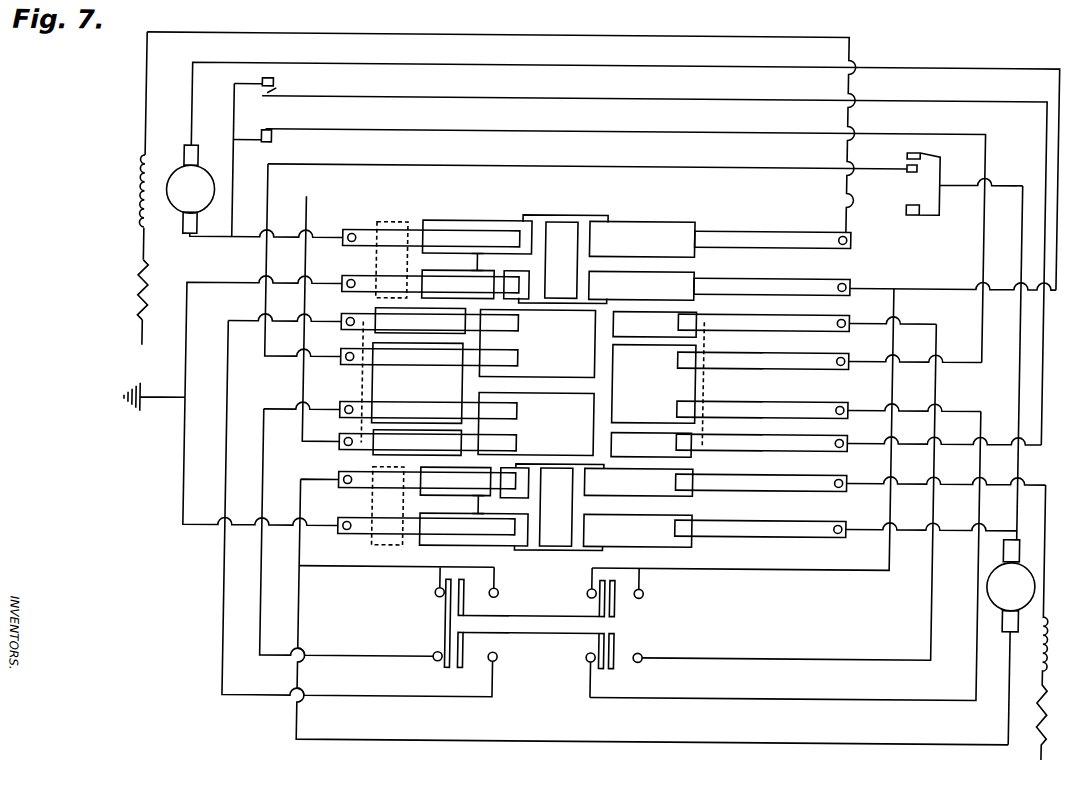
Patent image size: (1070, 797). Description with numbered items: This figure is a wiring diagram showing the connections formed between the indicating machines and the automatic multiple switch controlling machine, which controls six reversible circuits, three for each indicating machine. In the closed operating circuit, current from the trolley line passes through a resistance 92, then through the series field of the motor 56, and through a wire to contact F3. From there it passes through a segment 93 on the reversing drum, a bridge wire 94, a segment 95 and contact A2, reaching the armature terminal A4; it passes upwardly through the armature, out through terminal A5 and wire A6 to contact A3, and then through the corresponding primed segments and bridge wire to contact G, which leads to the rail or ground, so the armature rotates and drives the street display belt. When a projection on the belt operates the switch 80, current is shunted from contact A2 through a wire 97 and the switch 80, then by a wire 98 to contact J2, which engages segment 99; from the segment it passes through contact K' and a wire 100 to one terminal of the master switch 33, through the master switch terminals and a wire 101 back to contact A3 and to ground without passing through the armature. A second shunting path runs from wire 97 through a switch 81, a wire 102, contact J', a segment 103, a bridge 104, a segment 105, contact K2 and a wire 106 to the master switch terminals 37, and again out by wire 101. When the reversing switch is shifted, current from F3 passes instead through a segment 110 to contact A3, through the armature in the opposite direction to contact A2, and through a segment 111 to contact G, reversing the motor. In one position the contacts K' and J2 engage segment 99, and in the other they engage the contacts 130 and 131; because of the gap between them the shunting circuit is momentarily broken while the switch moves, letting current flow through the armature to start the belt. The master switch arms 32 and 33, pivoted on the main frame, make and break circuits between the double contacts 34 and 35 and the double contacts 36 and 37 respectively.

The motor field 56 is at (136, 187).
The resistance 92 is at (130, 299).
The armature terminal A5 is at (180, 148).
The armature terminal A4 is at (187, 241).
The wire A6 is at (300, 63).
The switch 81 is at (282, 90).
The wire 102 is at (540, 97).
The switch 80 is at (268, 144).
The wire 98 is at (362, 130).
The wire 97 is at (264, 182).
The contact F3 is at (846, 250).
The contact A3 is at (846, 280).
The contact A2 is at (345, 247).
The contact G is at (345, 292).
The segment 111 is at (396, 260).
The segment 95 is at (474, 221).
The bridge wire 94 is at (570, 215).
The segment 110 is at (563, 260).
The segment 93 is at (650, 276).
The contact 131 is at (478, 382).
The contact 130 is at (536, 424).
The segment 105 is at (654, 325).
The segment 99 is at (654, 384).
The segment 103 is at (651, 445).
The bridge 104 is at (703, 397).
The contact K2 is at (846, 326).
The contact J2 is at (830, 364).
The contact K' is at (771, 419).
The contact J' is at (767, 454).
The wire 101 is at (772, 574).
The wire 106 is at (924, 614).
The wire 100 is at (772, 697).
The master switch arm 32 is at (438, 592).
The double contact 34 is at (437, 653).
The double contact 35 is at (502, 593).
The double contact 36 is at (590, 591).
The double contact 37 is at (647, 652).
The master switch arm 33 is at (612, 598).